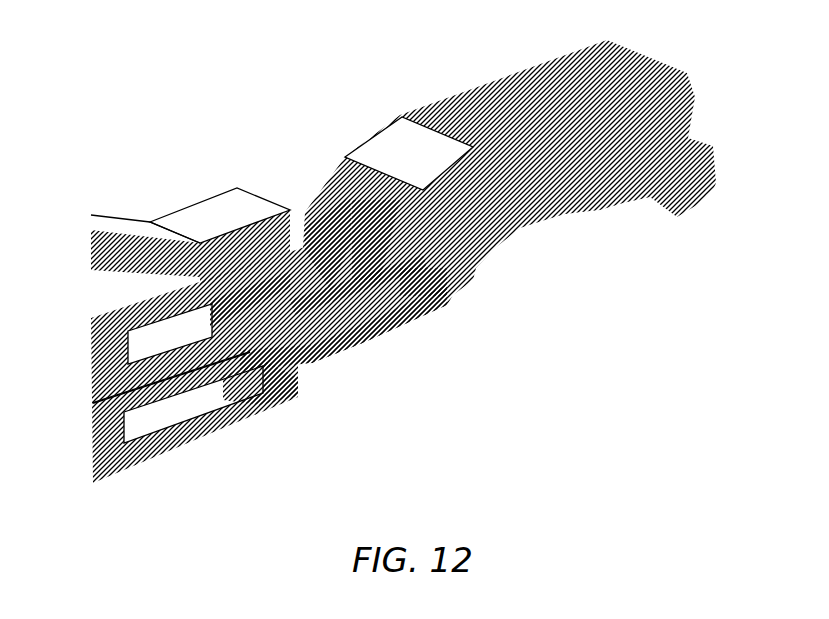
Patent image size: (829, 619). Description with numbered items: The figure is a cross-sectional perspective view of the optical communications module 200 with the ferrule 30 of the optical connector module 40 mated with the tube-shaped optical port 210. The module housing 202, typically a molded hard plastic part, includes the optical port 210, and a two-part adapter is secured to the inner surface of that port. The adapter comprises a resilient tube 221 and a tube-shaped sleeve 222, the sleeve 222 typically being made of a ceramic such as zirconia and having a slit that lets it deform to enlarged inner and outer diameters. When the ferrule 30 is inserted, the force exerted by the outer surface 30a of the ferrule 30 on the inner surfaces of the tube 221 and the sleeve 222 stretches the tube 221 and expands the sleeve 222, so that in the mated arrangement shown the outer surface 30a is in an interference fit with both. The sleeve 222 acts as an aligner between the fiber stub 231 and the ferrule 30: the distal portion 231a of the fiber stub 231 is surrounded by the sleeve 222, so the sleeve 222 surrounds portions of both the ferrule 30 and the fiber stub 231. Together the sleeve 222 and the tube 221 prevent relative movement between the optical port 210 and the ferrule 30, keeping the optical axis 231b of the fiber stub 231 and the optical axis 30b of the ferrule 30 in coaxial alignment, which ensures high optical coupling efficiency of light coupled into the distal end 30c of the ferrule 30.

The optical communications module 200 is at (213, 88).
The module housing 202 is at (694, 182).
The optical port 210 is at (363, 333).
The resilient tube 221 is at (282, 357).
The sleeve 222 is at (330, 283).
The fiber stub 231 is at (370, 303).
The distal portion 231a is at (371, 282).
The optical axis 231b is at (427, 287).
The ferrule 30 is at (269, 367).
The outer surface 30a is at (173, 397).
The optical axis 30b is at (248, 338).
The distal end 30c is at (325, 320).
The optical connector module 40 is at (196, 216).